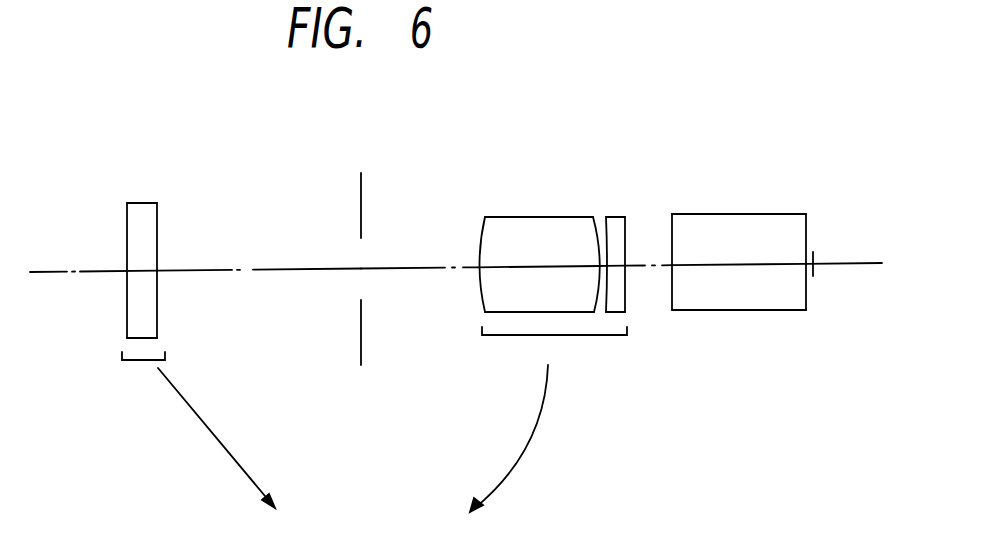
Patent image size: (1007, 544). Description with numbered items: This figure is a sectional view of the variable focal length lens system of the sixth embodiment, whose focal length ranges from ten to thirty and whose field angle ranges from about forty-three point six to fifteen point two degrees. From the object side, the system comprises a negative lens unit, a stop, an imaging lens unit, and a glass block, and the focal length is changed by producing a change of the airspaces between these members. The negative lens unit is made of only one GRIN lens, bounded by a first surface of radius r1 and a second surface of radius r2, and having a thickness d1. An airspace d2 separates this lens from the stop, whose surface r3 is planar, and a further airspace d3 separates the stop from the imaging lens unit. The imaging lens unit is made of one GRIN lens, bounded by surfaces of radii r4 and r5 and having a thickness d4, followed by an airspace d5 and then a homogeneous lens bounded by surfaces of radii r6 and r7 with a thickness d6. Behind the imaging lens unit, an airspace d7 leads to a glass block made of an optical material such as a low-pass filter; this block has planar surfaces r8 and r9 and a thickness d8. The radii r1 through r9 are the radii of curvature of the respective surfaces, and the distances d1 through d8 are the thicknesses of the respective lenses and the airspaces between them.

The radius of curvature of first lens surface r1 is at (127, 220).
The radius of curvature of second lens surface r2 is at (157, 218).
The stop surface r3 is at (361, 183).
The radius of curvature of fourth lens surface r4 is at (481, 227).
The radius of curvature of fifth lens surface r5 is at (598, 233).
The radius of curvature of sixth lens surface r6 is at (606, 228).
The radius of curvature of seventh lens surface r7 is at (627, 227).
The radius of curvature of eighth surface r8 is at (672, 228).
The radius of curvature of ninth surface r9 is at (807, 218).
The thickness of first lens d1 is at (143, 271).
The airspace between first lens and stop d2 is at (272, 272).
The airspace between stop and imaging lens unit d3 is at (393, 272).
The thickness of second lens d4 is at (503, 270).
The airspace between second and third lenses d5 is at (603, 266).
The thickness of third lens d6 is at (617, 268).
The airspace between imaging lens unit and glass block d7 is at (643, 267).
The thickness of glass block d8 is at (723, 265).